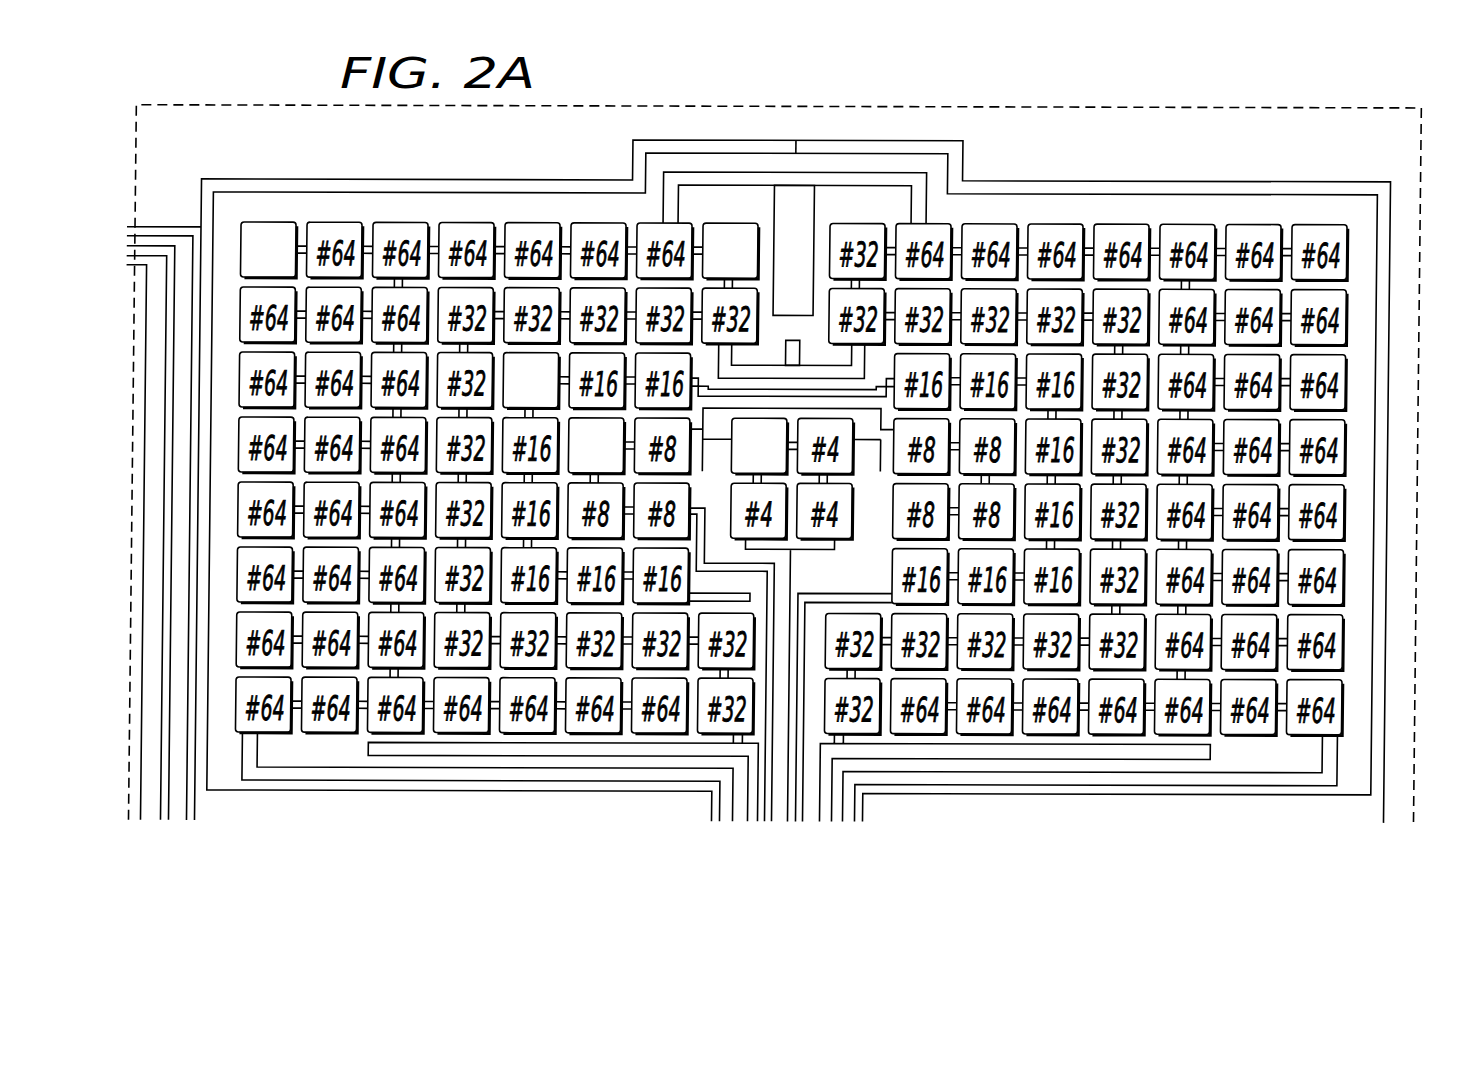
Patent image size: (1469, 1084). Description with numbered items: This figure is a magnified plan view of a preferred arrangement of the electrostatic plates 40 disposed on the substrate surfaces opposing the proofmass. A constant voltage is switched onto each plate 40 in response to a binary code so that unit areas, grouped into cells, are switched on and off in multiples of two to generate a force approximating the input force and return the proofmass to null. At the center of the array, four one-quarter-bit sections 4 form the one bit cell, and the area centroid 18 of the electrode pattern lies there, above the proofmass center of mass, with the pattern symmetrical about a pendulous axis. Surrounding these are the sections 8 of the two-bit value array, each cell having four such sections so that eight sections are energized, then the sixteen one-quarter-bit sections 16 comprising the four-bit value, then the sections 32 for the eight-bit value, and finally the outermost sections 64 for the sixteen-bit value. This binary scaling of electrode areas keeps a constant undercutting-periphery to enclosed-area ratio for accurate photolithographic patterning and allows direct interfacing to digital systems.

The area centroid 18 is at (843, 525).
The plates 40 is at (1335, 658).
The sixteen-bit value sections 64 is at (268, 250).
The eight-bit value sections 32 is at (730, 251).
The four-bit value sections 16 is at (531, 381).
The two-bit value sections 8 is at (596, 446).
The one-bit cell sections 4 is at (759, 446).